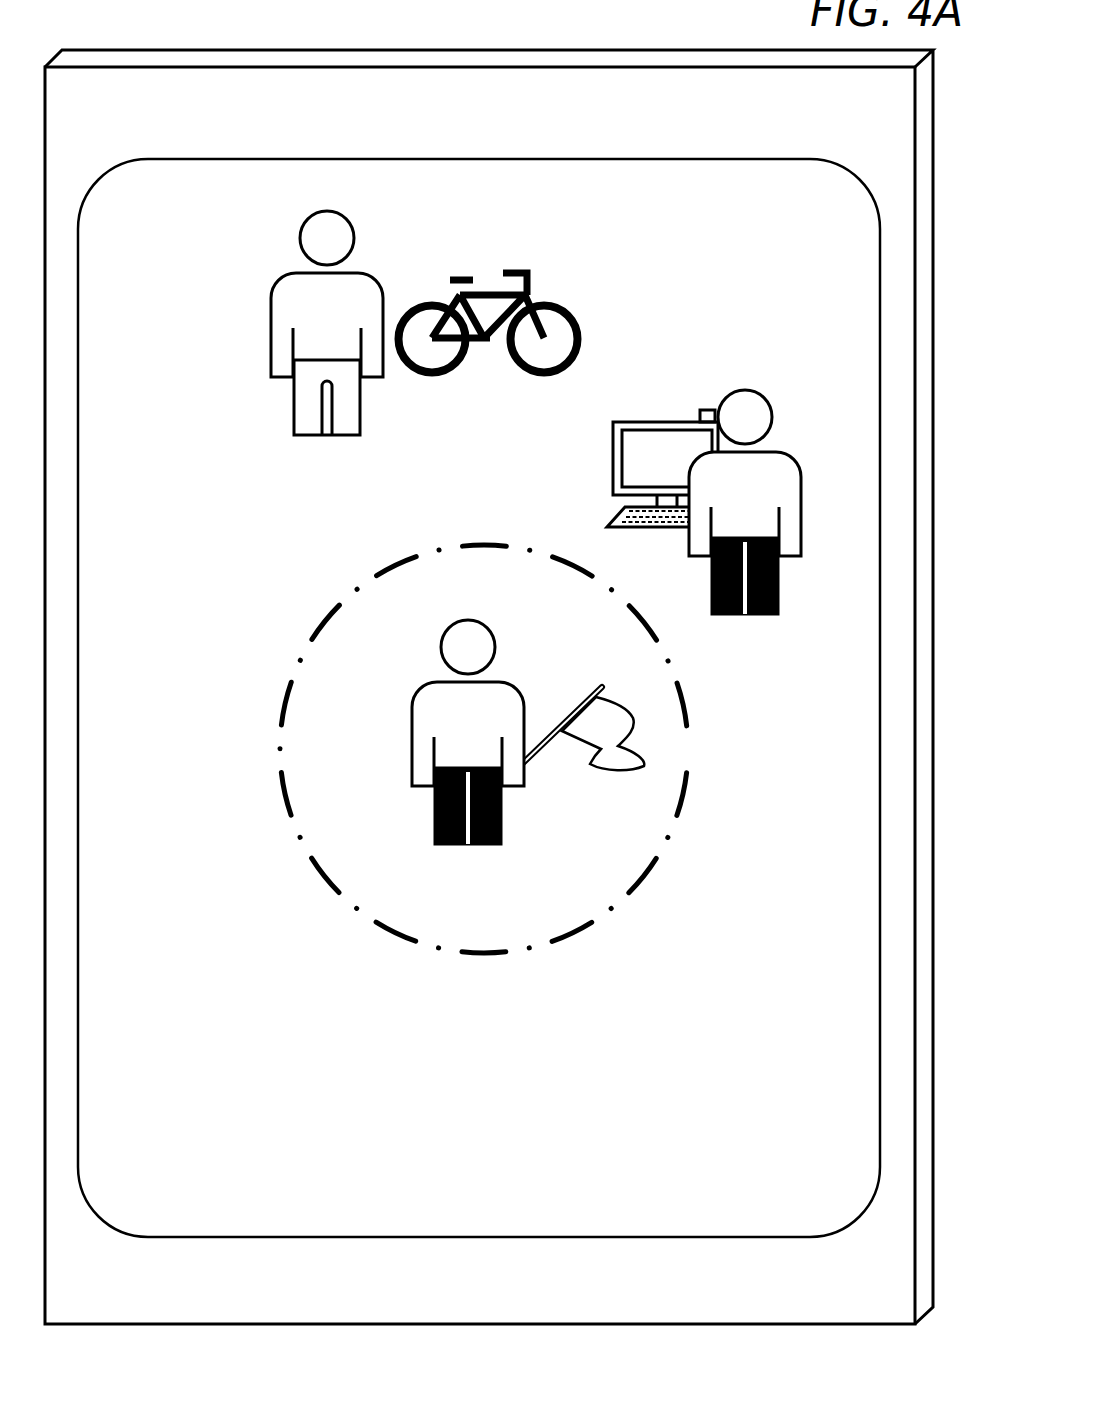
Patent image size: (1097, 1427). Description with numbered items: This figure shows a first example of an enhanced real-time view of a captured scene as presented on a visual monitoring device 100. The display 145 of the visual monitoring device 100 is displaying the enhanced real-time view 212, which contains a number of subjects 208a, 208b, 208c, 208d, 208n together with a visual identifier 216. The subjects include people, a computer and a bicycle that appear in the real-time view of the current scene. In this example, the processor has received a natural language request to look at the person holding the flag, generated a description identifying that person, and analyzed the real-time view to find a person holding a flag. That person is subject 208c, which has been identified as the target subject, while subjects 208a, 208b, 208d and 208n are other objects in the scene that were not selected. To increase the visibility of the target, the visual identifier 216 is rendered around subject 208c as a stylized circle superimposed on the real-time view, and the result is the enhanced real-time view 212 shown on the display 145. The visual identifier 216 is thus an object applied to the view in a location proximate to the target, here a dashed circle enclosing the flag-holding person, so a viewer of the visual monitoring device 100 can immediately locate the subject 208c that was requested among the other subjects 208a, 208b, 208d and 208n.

The visual monitoring device 100 is at (628, 101).
The display 145 is at (538, 190).
The enhanced real-time view 212 is at (757, 212).
The visual identifier 216 is at (783, 1013).
The subject 208a is at (770, 500).
The subject 208b is at (685, 568).
The subject 208c is at (493, 728).
The subject 208d is at (593, 266).
The subject 208n is at (352, 318).